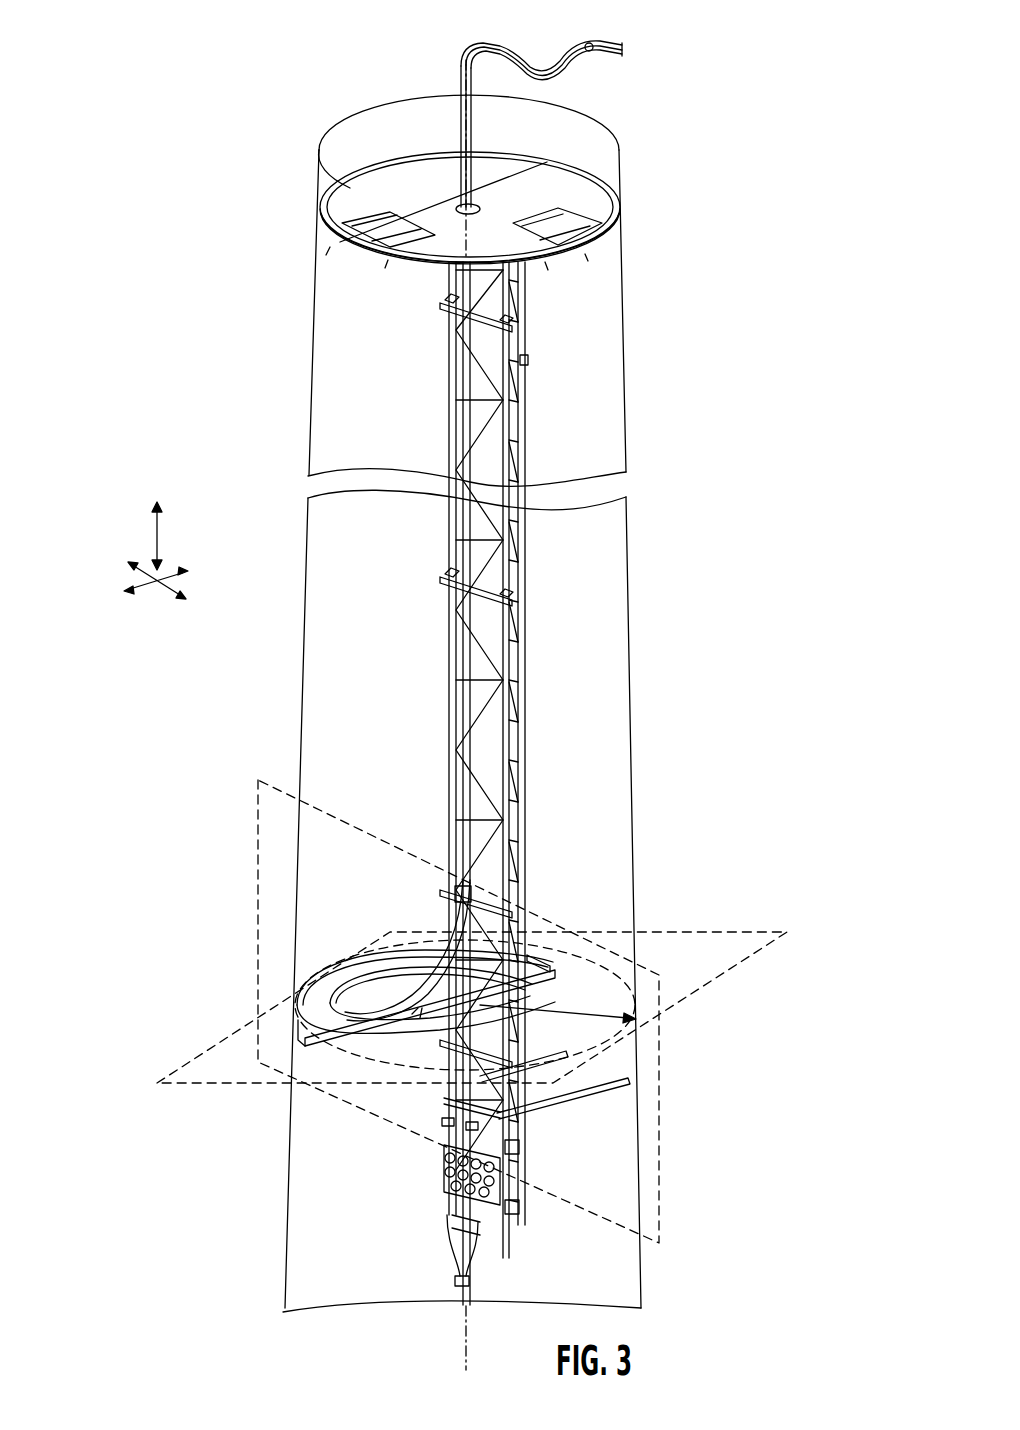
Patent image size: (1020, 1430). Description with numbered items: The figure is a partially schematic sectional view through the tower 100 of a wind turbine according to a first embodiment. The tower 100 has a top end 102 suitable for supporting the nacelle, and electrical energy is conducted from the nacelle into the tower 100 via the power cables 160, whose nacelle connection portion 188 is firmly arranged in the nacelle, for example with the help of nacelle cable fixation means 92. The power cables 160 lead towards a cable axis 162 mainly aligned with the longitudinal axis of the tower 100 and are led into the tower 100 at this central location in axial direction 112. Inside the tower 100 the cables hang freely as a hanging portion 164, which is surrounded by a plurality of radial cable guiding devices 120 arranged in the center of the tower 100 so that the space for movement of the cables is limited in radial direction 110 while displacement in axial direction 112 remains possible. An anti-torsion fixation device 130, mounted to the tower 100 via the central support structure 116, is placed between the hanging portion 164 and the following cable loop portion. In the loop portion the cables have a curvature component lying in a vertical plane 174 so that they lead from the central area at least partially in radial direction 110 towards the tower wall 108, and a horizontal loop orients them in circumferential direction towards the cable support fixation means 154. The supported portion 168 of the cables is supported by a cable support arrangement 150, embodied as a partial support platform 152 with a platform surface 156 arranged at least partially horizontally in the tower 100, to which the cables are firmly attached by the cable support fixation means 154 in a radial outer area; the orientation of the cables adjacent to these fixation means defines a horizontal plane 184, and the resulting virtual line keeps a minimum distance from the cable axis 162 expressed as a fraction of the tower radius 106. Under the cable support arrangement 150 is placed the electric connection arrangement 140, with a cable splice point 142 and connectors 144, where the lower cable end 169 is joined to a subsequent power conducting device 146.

The nacelle cable fixation means 92 is at (590, 52).
The tower 100 is at (180, 315).
The top end 102 is at (292, 177).
The tower radius 106 is at (556, 1015).
The tower wall 108 is at (630, 625).
The radial direction 110 is at (160, 595).
The axial direction 112 is at (158, 535).
The central support structure 116 is at (527, 680).
The radial cable guiding device 120 is at (455, 322).
The anti-torsion fixation device 130 is at (455, 893).
The electric connection arrangement 140 is at (381, 1170).
The cable splice point 142 is at (400, 1098).
The connectors 144 is at (447, 1167).
The subsequent power conducting device 146 is at (456, 1302).
The cable support arrangement 150 is at (298, 1005).
The support platform 152 is at (392, 962).
The cable support fixation means 154 is at (300, 1022).
The platform surface 156 is at (338, 988).
The power cable 160 is at (503, 55).
The cable axis 162 is at (472, 122).
The hanging portion 164 is at (452, 768).
The supported portion 168 is at (325, 995).
The lower cable end 169 is at (445, 1120).
The vertical plane 174 is at (661, 1110).
The horizontal plane 184 is at (180, 1068).
The nacelle connection portion 188 is at (636, 57).